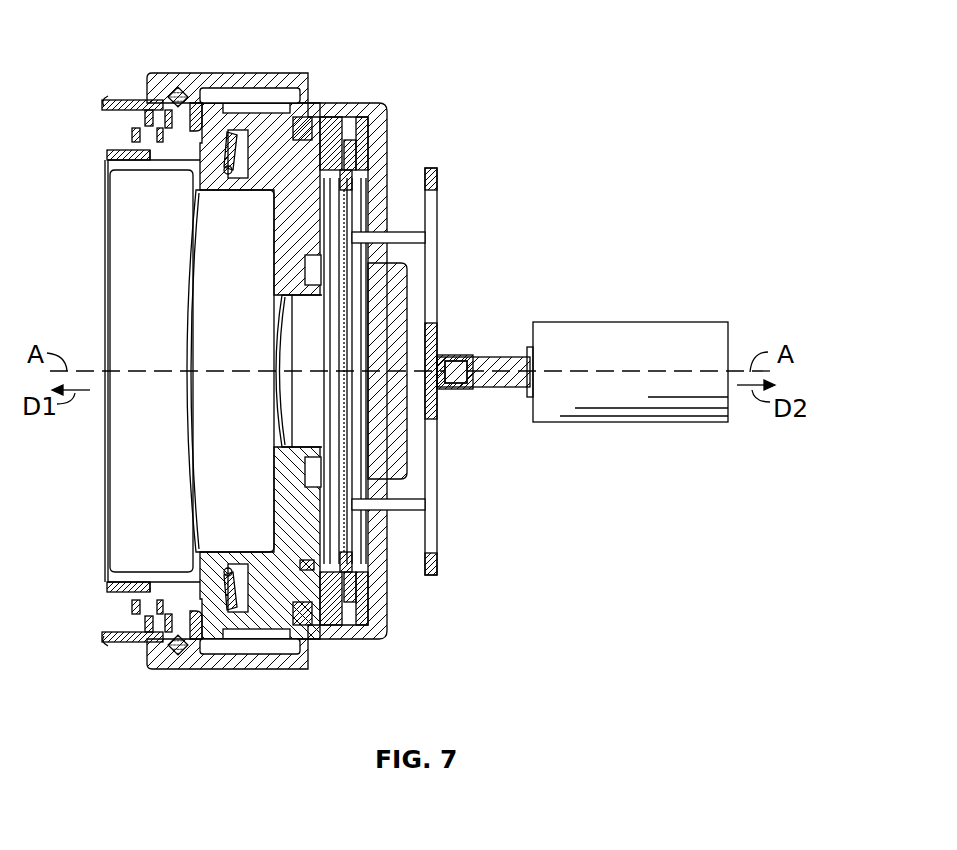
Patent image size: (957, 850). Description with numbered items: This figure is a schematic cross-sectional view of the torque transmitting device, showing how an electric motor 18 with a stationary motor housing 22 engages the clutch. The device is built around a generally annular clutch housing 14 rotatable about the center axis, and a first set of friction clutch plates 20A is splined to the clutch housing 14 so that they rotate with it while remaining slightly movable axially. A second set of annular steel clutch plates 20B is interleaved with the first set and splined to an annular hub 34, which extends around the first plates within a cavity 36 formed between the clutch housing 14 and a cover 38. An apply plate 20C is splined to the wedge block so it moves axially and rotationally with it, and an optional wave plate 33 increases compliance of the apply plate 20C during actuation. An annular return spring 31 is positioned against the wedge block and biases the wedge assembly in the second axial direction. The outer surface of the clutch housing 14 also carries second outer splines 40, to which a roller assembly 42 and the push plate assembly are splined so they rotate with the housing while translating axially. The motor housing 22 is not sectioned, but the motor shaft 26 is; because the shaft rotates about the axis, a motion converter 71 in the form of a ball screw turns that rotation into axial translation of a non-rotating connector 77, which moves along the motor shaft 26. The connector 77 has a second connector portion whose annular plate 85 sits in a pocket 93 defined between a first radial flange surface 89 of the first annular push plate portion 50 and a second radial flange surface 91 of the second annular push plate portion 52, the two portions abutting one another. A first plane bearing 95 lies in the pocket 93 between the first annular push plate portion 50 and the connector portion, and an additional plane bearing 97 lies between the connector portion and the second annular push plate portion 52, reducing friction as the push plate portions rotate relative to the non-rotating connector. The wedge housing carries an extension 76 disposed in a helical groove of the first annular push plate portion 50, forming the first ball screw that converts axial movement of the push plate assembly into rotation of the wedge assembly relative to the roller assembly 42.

The clutch housing 14 is at (185, 578).
The electric motor 18 is at (568, 310).
The first set of clutch plates 20A is at (131, 602).
The second set of clutch plates 20B is at (149, 632).
The apply plate 20C is at (200, 104).
The motor housing 22 is at (655, 322).
The motor shaft 26 is at (500, 357).
The return spring 31 is at (240, 174).
The wave plate 33 is at (180, 89).
The hub 34 is at (110, 99).
The cavity 36 is at (148, 152).
The cover 38 is at (165, 73).
The second outer splines 40 is at (307, 575).
The roller assembly 42 is at (297, 606).
The first annular push plate portion 50 is at (332, 122).
The second annular push plate portion 52 is at (352, 116).
The motion converter 71 is at (454, 396).
The extension 76 is at (104, 312).
The connector 77 is at (440, 210).
The annular plate 85 is at (346, 182).
The first radial flange surface 89 is at (370, 604).
The second radial flange surface 91 is at (368, 580).
The pocket 93 is at (346, 560).
The first plane bearing 95 is at (352, 148).
The additional plane bearing 97 is at (363, 166).